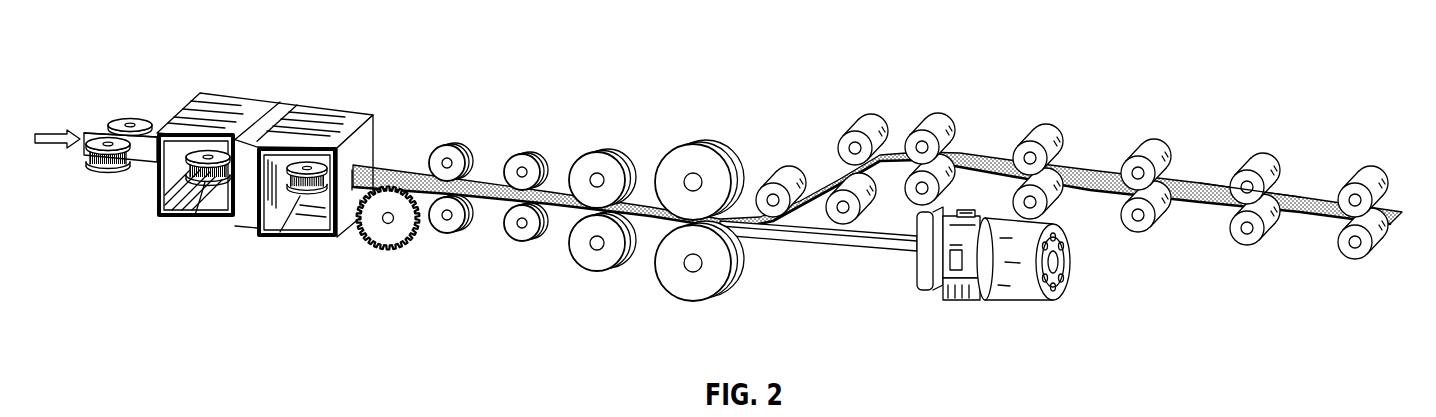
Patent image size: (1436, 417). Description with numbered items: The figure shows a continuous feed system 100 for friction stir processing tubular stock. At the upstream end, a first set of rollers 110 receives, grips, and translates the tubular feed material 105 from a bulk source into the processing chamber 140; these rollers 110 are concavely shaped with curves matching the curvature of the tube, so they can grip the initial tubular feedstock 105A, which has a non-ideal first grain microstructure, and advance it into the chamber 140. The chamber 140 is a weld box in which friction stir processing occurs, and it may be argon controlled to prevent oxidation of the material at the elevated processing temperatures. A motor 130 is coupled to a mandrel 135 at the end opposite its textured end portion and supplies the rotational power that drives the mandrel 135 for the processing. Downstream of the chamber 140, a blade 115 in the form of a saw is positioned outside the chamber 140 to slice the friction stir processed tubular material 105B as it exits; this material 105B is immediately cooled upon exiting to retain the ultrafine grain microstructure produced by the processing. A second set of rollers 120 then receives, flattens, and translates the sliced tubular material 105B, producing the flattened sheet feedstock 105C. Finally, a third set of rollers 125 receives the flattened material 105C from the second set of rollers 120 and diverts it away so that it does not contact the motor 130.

The continuous feed system 100 is at (567, 66).
The tubular feed material 105 is at (87, 121).
The initial tubular feedstock 105A is at (103, 128).
The friction stir processed tubular material 105B is at (392, 169).
The flattened sheet feedstock 105C is at (1203, 180).
The first set of rollers 110 is at (103, 172).
The blade 115 is at (392, 251).
The second set of rollers 120 is at (446, 236).
The third set of rollers 125 is at (788, 180).
The motor 130 is at (1001, 312).
The mandrel 135 is at (858, 243).
The processing chamber 140 is at (278, 90).